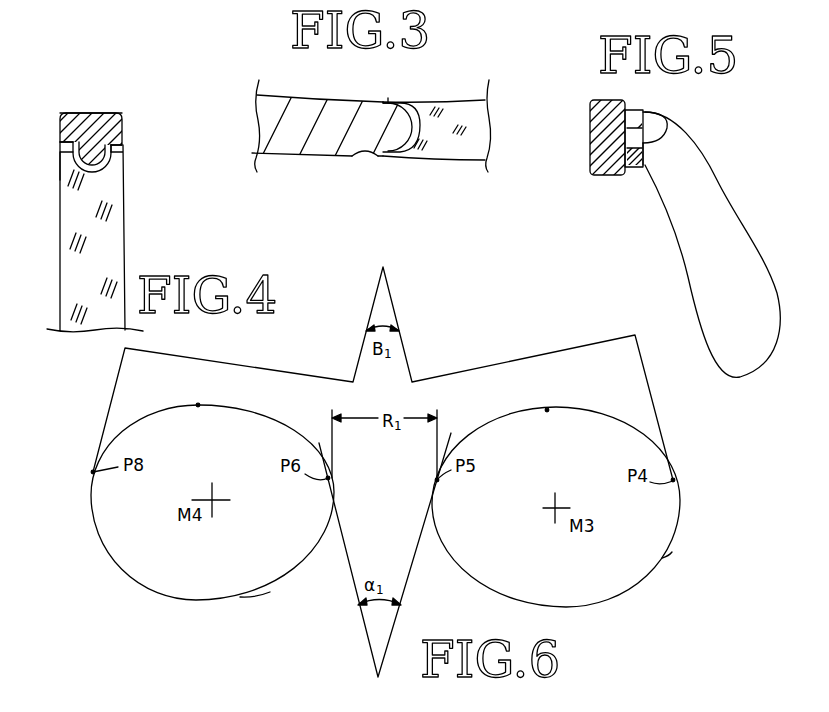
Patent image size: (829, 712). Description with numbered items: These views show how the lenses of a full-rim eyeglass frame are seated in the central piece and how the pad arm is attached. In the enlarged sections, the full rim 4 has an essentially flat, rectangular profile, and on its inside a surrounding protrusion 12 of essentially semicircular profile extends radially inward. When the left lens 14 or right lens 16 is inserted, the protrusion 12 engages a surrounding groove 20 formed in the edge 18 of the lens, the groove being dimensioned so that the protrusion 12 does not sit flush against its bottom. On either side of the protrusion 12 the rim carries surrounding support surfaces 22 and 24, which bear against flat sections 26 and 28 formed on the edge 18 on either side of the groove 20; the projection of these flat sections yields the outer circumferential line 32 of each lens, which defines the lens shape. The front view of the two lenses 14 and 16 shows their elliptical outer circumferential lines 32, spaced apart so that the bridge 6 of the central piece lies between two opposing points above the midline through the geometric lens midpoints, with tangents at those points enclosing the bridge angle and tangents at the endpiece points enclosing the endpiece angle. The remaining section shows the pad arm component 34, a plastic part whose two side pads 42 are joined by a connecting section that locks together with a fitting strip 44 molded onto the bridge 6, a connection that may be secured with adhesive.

In FIG. 4, the full rim 4 is at (106, 103).
In FIG. 4, the bridge 6 is at (91, 137).
In FIG. 3, the bridge 6 is at (291, 110).
In FIG. 5, the bridge 6 is at (600, 137).
In FIG. 4, the protrusion 12 is at (96, 160).
In FIG. 3, the protrusion 12 is at (400, 135).
In FIG. 6, the left lens 14 is at (143, 562).
In FIG. 4, the right lens 16 is at (108, 250).
In FIG. 3, the right lens 16 is at (474, 108).
In FIG. 6, the right lens 16 is at (627, 572).
In FIG. 6, the edge 18 is at (270, 592).
In FIG. 4, the groove 20 is at (87, 177).
In FIG. 3, the groove 20 is at (418, 108).
In FIG. 4, the support surface 22 is at (121, 138).
In FIG. 3, the support surface 22 is at (382, 101).
In FIG. 4, the support surface 24 is at (60, 140).
In FIG. 3, the support surface 24 is at (371, 158).
In FIG. 4, the flat section 26 is at (66, 153).
In FIG. 4, the flat section 28 is at (122, 158).
In FIG. 6, the outer circumferential line 32 is at (198, 405).
In FIG. 5, the pad arm component 34 is at (663, 210).
In FIG. 5, the side pad 42 is at (717, 193).
In FIG. 5, the fitting strip 44 is at (652, 125).